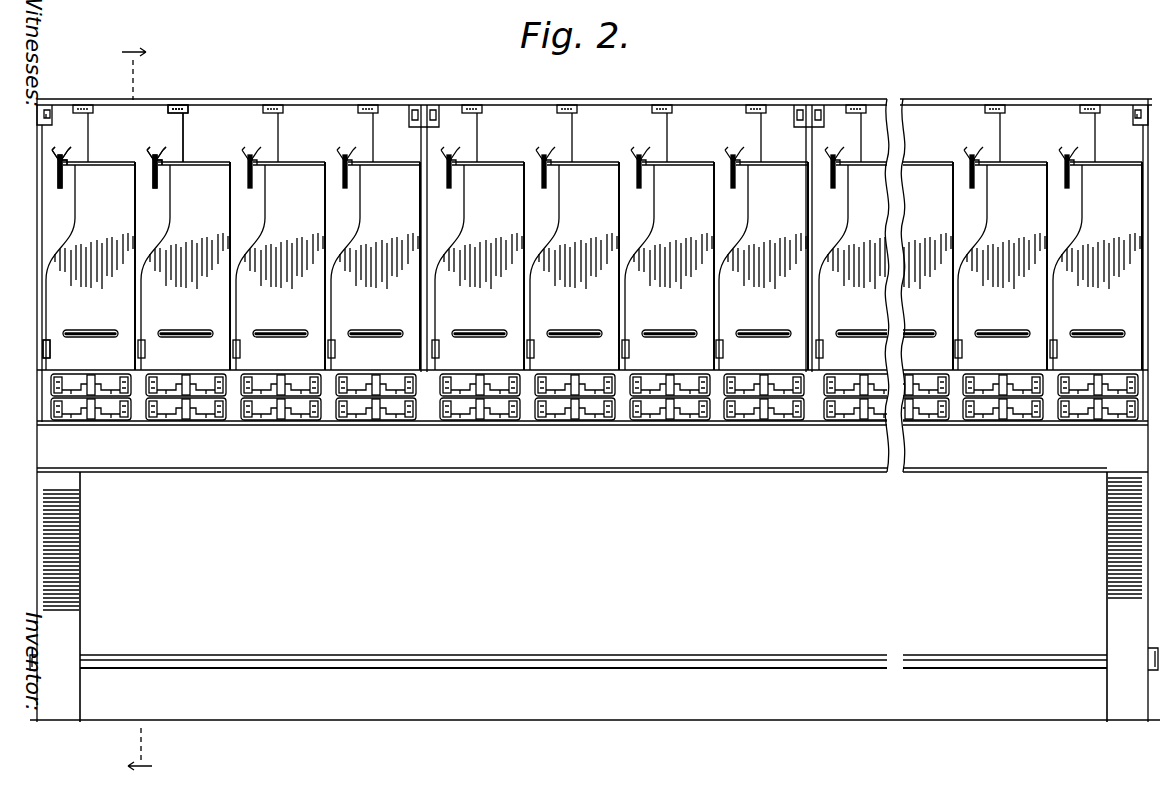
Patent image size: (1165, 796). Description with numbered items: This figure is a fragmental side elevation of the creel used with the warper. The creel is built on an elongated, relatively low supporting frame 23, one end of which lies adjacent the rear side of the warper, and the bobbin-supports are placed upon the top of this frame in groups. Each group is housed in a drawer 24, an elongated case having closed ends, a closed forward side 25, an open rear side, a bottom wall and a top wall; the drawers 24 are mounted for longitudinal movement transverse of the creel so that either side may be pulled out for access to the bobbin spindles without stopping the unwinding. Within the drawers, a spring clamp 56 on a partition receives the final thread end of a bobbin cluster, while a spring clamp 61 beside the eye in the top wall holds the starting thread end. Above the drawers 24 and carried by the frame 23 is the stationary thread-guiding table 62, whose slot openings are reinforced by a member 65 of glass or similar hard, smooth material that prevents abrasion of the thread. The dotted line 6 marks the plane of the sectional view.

The section line 6— 6 is at (137, 409).
The supporting frame 23 is at (625, 465).
The drawer 24 is at (592, 262).
The closed forward side 25 is at (147, 180).
The spring clamp 56 is at (134, 347).
The spring clamp 61 is at (56, 150).
The table 62 is at (816, 222).
The reinforcing member 65 is at (187, 113).